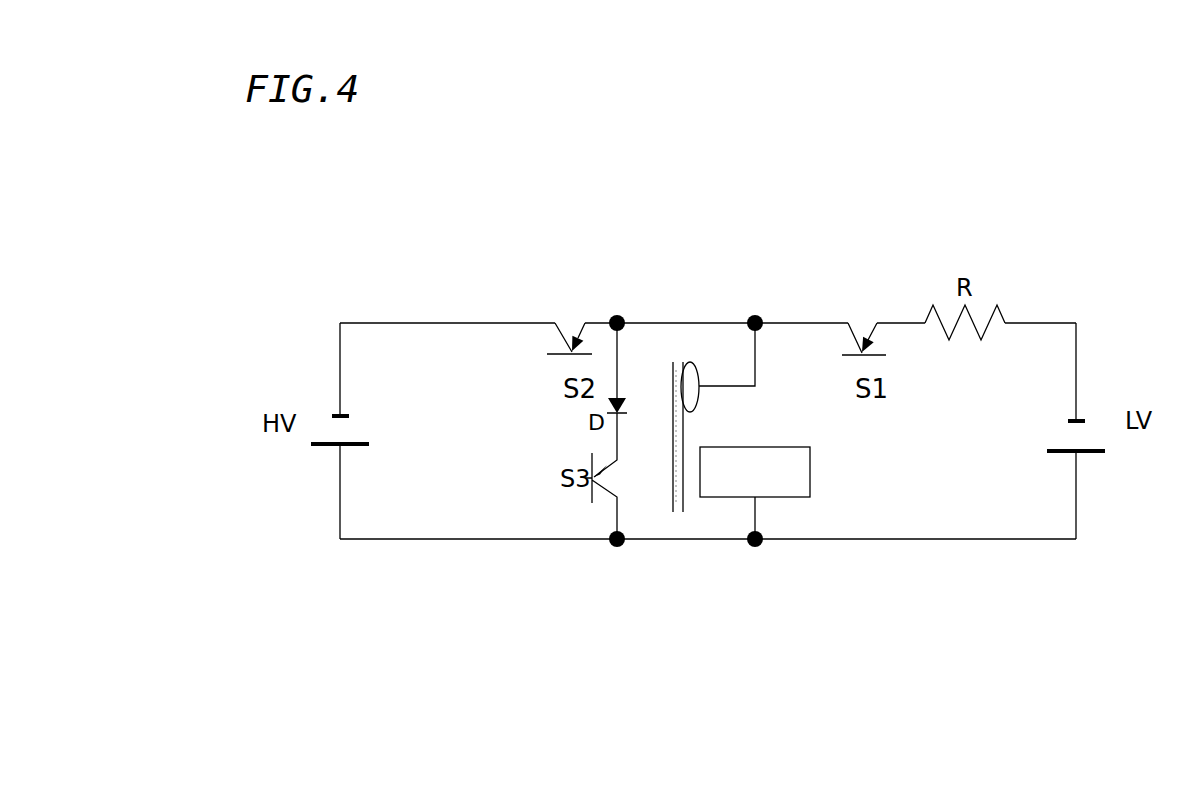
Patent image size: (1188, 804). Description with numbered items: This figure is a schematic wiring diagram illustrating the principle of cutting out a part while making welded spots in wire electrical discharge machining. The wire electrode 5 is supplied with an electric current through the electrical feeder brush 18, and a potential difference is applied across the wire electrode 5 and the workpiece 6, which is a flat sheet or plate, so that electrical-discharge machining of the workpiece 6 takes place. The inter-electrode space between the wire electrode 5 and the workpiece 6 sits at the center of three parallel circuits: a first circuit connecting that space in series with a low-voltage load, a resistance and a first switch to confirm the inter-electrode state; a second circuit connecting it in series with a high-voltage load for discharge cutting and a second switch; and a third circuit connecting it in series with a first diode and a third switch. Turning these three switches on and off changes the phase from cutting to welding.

The wire electrode 5 is at (680, 403).
The electrical feeder brush 18 is at (692, 378).
The workpiece 6 is at (790, 492).